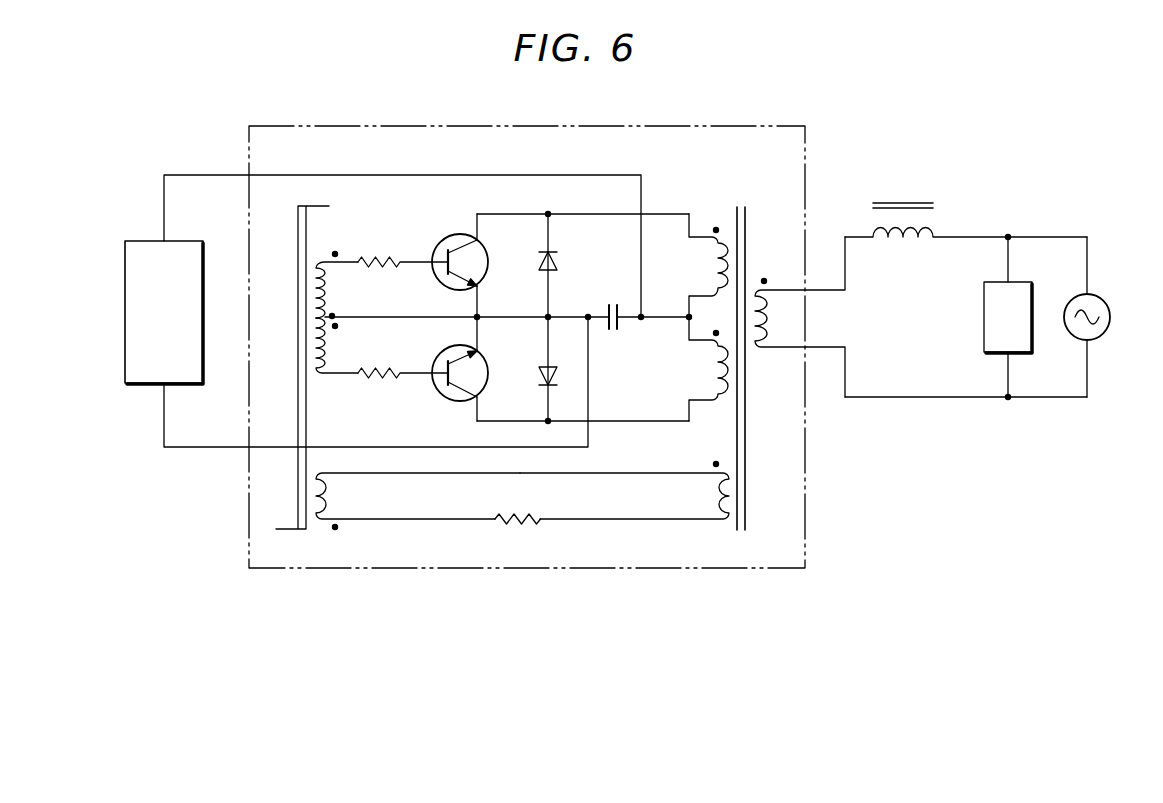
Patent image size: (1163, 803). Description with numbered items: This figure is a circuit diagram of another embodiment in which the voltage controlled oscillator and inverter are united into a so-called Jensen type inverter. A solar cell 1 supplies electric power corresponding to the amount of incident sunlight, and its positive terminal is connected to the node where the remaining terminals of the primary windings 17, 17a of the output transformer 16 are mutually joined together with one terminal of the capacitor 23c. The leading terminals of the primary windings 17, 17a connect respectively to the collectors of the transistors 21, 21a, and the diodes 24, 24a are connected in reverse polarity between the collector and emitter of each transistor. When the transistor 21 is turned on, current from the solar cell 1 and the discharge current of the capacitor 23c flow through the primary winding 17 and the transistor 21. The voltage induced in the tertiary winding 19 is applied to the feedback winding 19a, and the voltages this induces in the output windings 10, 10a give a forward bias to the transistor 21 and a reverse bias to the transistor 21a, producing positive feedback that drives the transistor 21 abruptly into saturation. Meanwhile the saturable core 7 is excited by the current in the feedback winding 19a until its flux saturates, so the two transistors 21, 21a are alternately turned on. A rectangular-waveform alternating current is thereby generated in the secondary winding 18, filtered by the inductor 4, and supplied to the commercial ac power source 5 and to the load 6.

The solar cell 1 is at (124, 253).
The inductor 4 is at (935, 230).
The commercial ac power source 5 is at (1103, 297).
The load 6 is at (1034, 290).
The saturable core 7 is at (298, 225).
The output winding 10 is at (332, 292).
The output winding 10a is at (332, 347).
The output transformer 16 is at (748, 222).
The primary winding 17 is at (710, 268).
The primary winding 17a is at (710, 373).
The secondary winding 18 is at (767, 327).
The tertiary winding 19 is at (712, 499).
The feedback winding 19a is at (332, 494).
The transistor 21 is at (446, 242).
The transistor 21a is at (453, 420).
The capacitor 23c is at (615, 298).
The diode 24 is at (538, 263).
The diode 24a is at (538, 378).